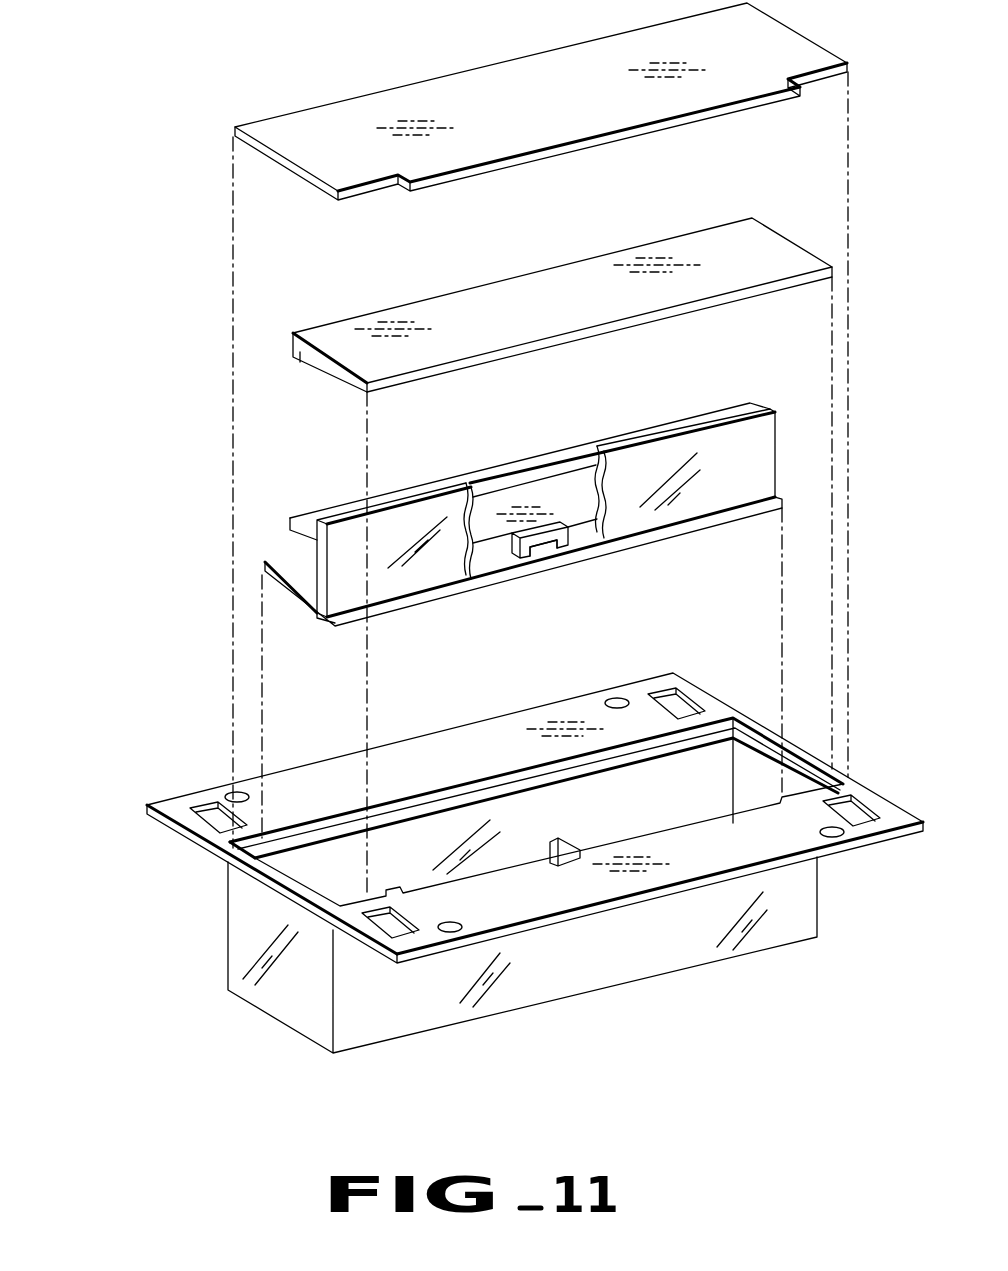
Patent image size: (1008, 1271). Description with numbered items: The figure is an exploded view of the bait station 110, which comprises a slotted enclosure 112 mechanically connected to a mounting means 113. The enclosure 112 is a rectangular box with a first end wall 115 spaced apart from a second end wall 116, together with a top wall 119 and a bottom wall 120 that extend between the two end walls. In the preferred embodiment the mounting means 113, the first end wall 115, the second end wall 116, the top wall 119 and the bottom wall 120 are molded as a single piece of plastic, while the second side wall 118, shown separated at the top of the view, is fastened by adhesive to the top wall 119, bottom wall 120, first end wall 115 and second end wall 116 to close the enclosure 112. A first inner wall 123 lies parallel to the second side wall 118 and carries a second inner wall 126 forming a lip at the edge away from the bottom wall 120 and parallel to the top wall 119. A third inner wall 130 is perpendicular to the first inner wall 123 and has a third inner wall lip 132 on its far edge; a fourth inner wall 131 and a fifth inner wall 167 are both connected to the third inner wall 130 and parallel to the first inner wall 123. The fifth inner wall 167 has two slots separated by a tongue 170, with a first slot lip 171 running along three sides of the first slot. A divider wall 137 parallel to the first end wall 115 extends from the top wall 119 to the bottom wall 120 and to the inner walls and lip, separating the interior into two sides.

The bait station 110 is at (196, 205).
The second side wall 118 is at (390, 95).
The first inner wall 123 is at (542, 324).
The second inner wall 126 is at (297, 353).
The third inner wall 130 is at (767, 430).
The fourth inner wall 131 is at (303, 520).
The third inner wall lip 132 is at (710, 523).
The fifth inner wall 167 is at (463, 499).
The tongue 170 is at (542, 527).
The first slot lip 171 is at (517, 568).
The mounting means 113 is at (494, 801).
The first end wall 115 is at (753, 763).
The top wall 119 is at (451, 821).
The divider wall 137 is at (560, 842).
The slotted enclosure 112 is at (530, 891).
The second end wall 116 is at (267, 995).
The bottom wall 120 is at (425, 1020).